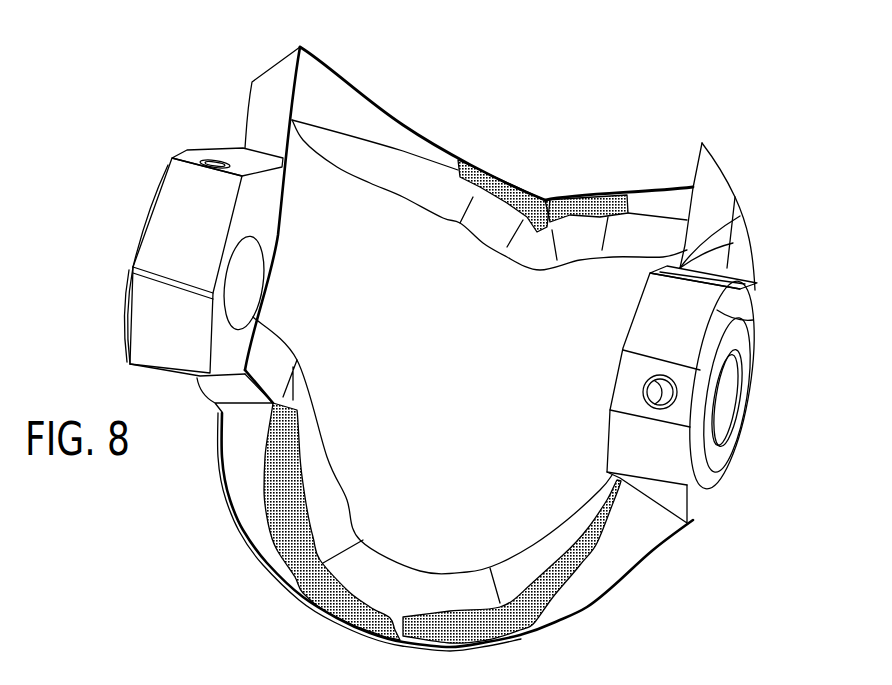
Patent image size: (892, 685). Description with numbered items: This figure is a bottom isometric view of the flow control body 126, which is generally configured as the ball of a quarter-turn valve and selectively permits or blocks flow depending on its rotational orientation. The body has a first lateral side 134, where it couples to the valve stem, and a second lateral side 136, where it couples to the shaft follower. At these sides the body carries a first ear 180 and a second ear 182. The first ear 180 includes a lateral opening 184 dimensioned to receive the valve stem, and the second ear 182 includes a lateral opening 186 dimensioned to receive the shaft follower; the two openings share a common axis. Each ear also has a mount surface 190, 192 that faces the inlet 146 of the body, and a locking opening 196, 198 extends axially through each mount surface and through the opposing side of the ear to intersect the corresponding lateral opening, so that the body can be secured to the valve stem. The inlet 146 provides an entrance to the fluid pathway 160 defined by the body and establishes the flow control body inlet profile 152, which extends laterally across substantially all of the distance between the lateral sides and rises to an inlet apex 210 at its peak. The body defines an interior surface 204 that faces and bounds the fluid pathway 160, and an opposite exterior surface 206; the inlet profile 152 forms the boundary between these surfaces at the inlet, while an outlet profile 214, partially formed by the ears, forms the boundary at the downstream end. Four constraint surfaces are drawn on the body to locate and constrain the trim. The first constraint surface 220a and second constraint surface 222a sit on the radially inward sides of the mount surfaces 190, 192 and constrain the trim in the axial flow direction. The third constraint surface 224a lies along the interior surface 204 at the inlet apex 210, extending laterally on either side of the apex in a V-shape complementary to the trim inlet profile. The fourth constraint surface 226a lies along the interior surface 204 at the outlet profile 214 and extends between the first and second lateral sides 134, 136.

The flow control body 126 is at (585, 608).
The first lateral side 134 is at (757, 407).
The second lateral side 136 is at (110, 218).
The inlet 146 is at (400, 118).
The flow control body inlet profile 152 is at (657, 193).
The fluid pathway 160 is at (543, 113).
The first ear 180 is at (720, 310).
The second ear 182 is at (170, 178).
The lateral opening 184 is at (723, 410).
The lateral opening 186 is at (240, 283).
The mount surface 190 is at (733, 243).
The mount surface 192 is at (240, 167).
The locking opening 196 is at (737, 273).
The locking opening 198 is at (207, 153).
The interior surface 204 is at (380, 570).
The exterior surface 206 is at (247, 502).
The inlet apex 210 is at (552, 200).
The outlet profile 214 is at (580, 548).
The first constraint surface 220a is at (740, 217).
The second constraint surface 222a is at (247, 177).
The third constraint surface 224a is at (515, 187).
The fourth constraint surface 226a is at (357, 613).